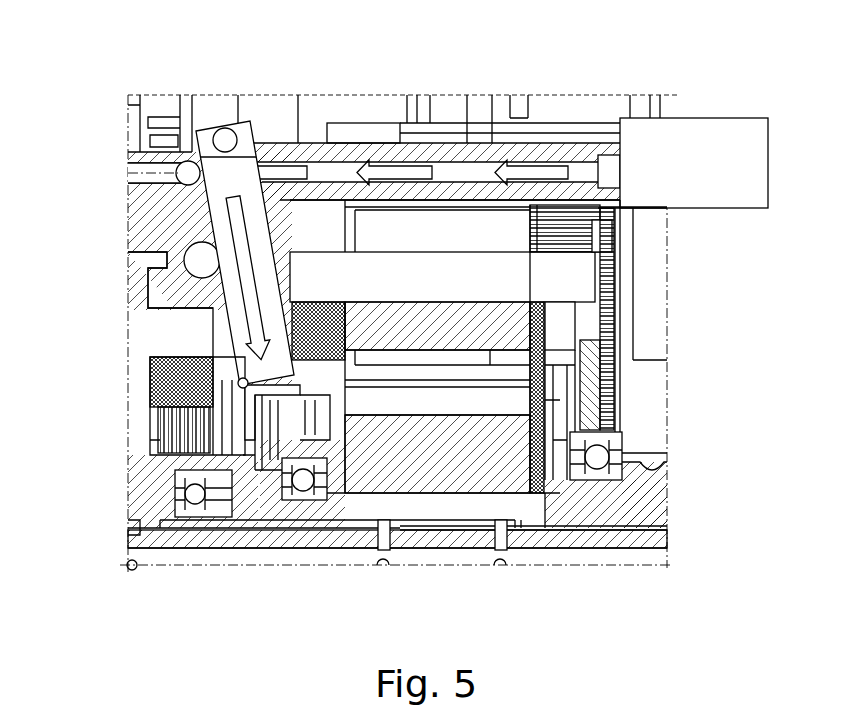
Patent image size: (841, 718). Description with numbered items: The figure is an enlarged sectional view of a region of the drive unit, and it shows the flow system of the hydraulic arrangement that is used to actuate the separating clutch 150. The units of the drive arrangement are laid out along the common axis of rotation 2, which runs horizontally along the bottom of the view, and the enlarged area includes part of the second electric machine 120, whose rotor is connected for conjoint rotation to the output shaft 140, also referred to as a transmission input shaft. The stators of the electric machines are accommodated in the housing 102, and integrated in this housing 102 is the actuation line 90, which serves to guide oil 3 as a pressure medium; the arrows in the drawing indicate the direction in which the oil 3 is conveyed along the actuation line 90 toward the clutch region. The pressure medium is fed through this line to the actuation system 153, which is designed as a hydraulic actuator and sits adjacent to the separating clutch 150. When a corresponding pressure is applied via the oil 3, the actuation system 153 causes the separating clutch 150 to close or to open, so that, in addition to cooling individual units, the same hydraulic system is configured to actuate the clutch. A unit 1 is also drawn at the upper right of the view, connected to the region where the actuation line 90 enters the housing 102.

The control unit / inverter box 1 is at (751, 160).
The common axis of rotation 2 is at (328, 563).
The oil 3 is at (528, 162).
The actuation line 90 is at (247, 272).
The housing 102 is at (150, 218).
The second electric machine 120 is at (613, 267).
The output shaft 140 is at (638, 500).
The separating clutch 150 is at (175, 440).
The actuation system 153 is at (263, 423).